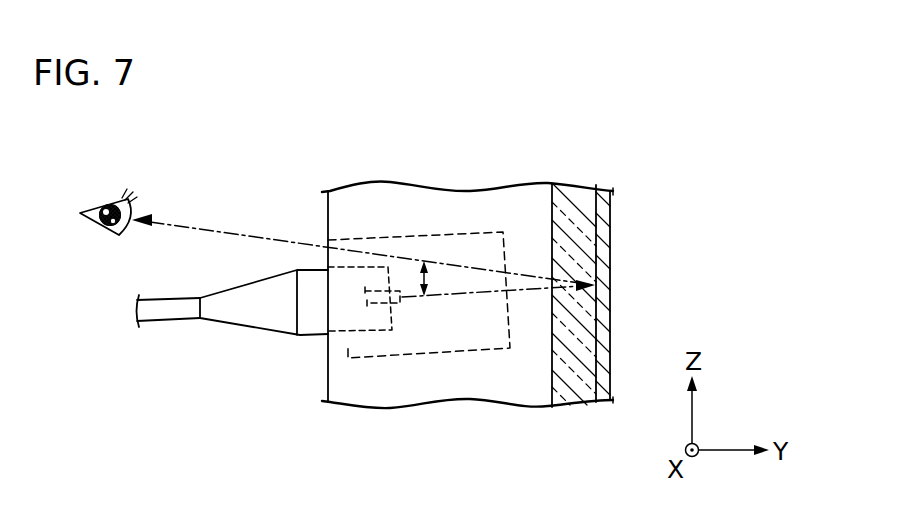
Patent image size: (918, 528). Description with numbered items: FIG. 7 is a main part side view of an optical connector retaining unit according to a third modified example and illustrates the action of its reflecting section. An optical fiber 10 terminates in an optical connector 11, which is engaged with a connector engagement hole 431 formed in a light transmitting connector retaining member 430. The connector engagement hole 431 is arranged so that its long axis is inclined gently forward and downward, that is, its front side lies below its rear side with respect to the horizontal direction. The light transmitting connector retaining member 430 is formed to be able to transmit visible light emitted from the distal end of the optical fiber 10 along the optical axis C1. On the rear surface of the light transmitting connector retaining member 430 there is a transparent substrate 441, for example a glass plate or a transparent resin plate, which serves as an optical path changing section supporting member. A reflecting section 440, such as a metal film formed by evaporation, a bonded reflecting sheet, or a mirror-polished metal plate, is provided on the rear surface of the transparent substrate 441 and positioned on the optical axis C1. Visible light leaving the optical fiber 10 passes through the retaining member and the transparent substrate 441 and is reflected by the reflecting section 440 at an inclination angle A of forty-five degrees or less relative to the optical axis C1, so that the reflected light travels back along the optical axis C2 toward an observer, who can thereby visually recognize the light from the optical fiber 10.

The optical fiber 10 is at (168, 320).
The optical connector 11 is at (309, 335).
The light transmitting connector retaining member 430 is at (318, 213).
The connector engagement hole 431 is at (348, 345).
The reflecting section 440 is at (598, 250).
The transparent substrate 441 is at (552, 368).
The inclination angle A is at (422, 278).
The optical axis C1 is at (448, 294).
The optical axis of reflected light C2 is at (240, 234).